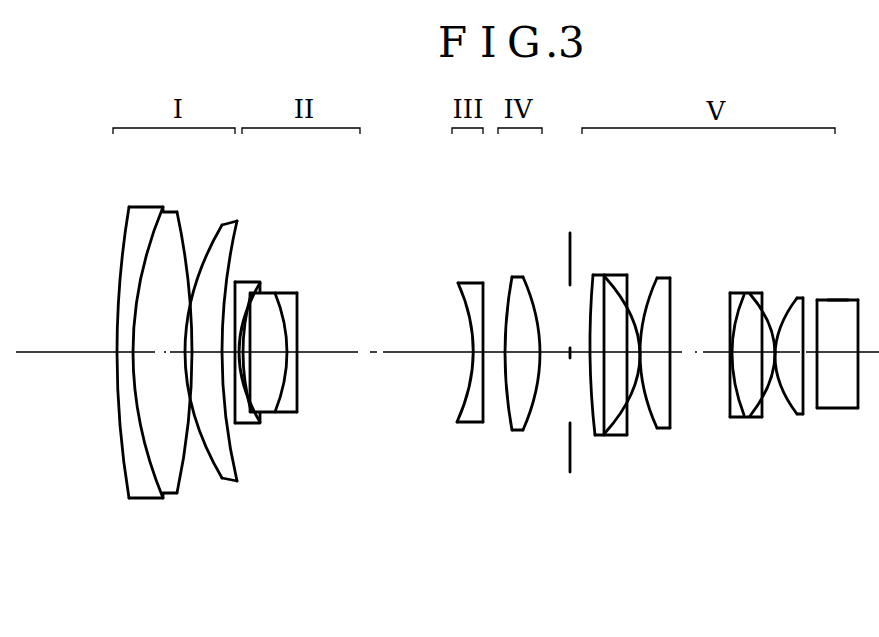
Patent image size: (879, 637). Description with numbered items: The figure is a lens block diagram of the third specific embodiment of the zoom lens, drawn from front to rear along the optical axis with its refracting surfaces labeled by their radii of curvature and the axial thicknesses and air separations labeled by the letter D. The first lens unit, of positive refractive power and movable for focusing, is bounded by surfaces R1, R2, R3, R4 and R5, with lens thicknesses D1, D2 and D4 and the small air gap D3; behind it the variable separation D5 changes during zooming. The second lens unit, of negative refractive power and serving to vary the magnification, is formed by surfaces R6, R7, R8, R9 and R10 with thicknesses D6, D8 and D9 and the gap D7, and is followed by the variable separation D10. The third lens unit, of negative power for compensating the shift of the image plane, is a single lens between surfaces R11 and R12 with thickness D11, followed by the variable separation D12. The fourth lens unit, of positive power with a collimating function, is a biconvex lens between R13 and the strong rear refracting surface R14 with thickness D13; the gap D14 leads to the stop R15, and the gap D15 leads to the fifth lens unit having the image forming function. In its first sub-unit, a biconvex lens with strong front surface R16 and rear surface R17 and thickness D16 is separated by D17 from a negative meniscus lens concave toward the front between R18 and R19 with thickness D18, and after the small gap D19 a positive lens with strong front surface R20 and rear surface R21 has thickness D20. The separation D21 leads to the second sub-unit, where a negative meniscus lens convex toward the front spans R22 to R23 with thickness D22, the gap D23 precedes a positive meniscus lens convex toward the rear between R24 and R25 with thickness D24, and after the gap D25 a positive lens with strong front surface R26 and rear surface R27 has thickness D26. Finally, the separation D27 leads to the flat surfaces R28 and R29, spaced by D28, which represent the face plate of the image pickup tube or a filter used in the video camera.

The radius of curvature of first surface R1 is at (124, 262).
The radius of curvature of second surface R2 is at (141, 275).
The radius of curvature of third surface R3 is at (187, 276).
The radius of curvature of fourth surface R4 is at (205, 272).
The radius of curvature of fifth surface R5 is at (230, 273).
The radius of curvature of sixth surface R6 is at (236, 295).
The radius of curvature of seventh surface R7 is at (257, 290).
The radius of curvature of eighth surface R8 is at (268, 296).
The radius of curvature of ninth surface R9 is at (280, 290).
The radius of curvature of tenth surface R10 is at (298, 323).
The radius of curvature of eleventh surface R11 is at (456, 298).
The radius of curvature of twelfth surface R12 is at (471, 297).
The radius of curvature of thirteenth surface R13 is at (502, 300).
The radius of curvature of fourteenth surface R14 is at (538, 298).
The stop R15 is at (569, 256).
The radius of curvature of sixteenth surface R16 is at (587, 300).
The radius of curvature of seventeenth surface R17 is at (600, 302).
The radius of curvature of eighteenth surface R18 is at (605, 298).
The radius of curvature of nineteenth surface R19 is at (633, 302).
The radius of curvature of twentieth surface R20 is at (648, 287).
The radius of curvature of twenty-first surface R21 is at (672, 302).
The radius of curvature of twenty-second surface R22 is at (731, 352).
The radius of curvature of twenty-third surface R23 is at (742, 296).
The radius of curvature of twenty-fourth surface R24 is at (767, 294).
The radius of curvature of twenty-fifth surface R25 is at (780, 352).
The radius of curvature of twenty-sixth surface R26 is at (803, 295).
The radius of curvature of twenty-seventh surface R27 is at (822, 352).
The front surface of face plate or filter R28 is at (843, 300).
The rear surface of face plate or filter R29 is at (859, 300).
The axial thickness D1 is at (128, 355).
The axial thickness D2 is at (152, 355).
The air separation D3 is at (186, 355).
The axial thickness D4 is at (205, 355).
The variable air separation D5 is at (227, 355).
The axial thickness D6 is at (237, 355).
The air separation D7 is at (242, 355).
The axial thickness D8 is at (266, 355).
The axial thickness D9 is at (292, 355).
The variable air separation D10 is at (353, 355).
The axial thickness D11 is at (473, 355).
The variable air separation D12 is at (497, 355).
The axial thickness D13 is at (520, 355).
The air separation D14 is at (548, 355).
The air separation D15 is at (577, 355).
The axial thickness D16 is at (596, 355).
The air separation D17 is at (614, 355).
The axial thickness D18 is at (623, 355).
The air separation D19 is at (637, 355).
The axial thickness D20 is at (657, 355).
The air separation D21 is at (680, 355).
The axial thickness D22 is at (737, 355).
The air separation D23 is at (757, 355).
The axial thickness D24 is at (769, 355).
The air separation D25 is at (788, 355).
The axial thickness D26 is at (810, 355).
The air separation D27 is at (838, 355).
The axial thickness D28 is at (848, 355).